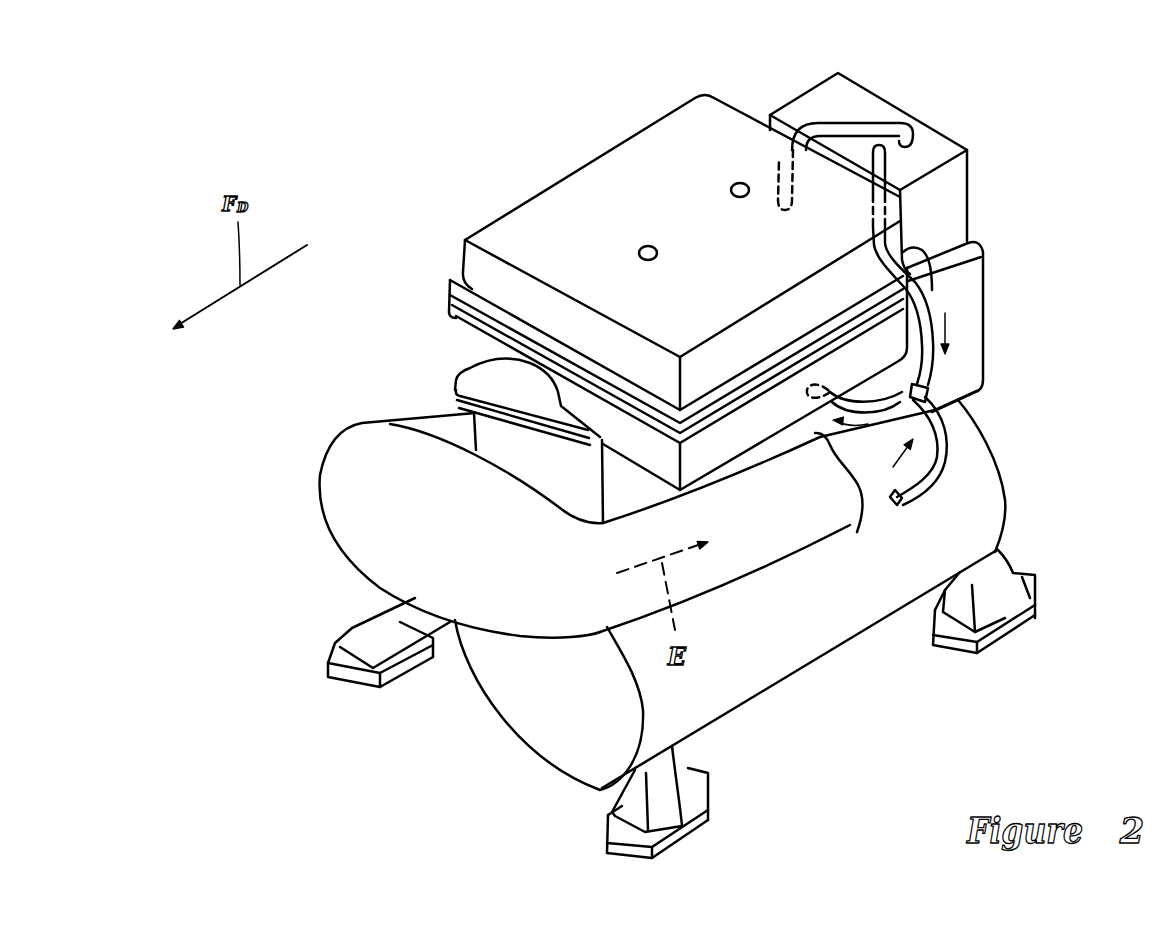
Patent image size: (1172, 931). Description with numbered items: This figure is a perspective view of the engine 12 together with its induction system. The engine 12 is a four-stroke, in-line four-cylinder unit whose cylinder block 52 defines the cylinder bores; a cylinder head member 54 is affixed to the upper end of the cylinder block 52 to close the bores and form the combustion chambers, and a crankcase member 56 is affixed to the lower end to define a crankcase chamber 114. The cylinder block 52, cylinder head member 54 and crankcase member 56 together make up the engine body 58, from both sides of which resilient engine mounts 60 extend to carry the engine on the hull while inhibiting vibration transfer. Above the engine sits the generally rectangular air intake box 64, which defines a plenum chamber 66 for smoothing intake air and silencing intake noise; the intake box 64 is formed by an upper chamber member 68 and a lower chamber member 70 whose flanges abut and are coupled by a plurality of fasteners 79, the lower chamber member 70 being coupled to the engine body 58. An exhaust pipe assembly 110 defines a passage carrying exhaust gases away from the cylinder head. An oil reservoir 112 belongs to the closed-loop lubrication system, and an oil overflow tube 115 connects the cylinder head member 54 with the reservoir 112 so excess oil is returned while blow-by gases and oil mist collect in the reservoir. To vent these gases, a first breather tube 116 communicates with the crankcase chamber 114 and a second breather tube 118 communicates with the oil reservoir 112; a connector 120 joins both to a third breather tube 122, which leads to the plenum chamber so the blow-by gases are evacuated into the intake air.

The engine 12 is at (687, 629).
The cylinder block 52 is at (552, 485).
The cylinder head member 54 is at (510, 383).
The crankcase member 56 is at (547, 723).
The engine body 58 is at (869, 292).
The engine mounts 60 is at (687, 757).
The air intake box 64 is at (589, 372).
The plenum chamber 66 is at (681, 234).
The upper chamber member 68 is at (470, 254).
The lower chamber member 70 is at (353, 280).
The fasteners 79 is at (733, 198).
The exhaust pipe assembly 110 is at (711, 595).
The oil reservoir 112 is at (946, 132).
The crankcase chamber 114 is at (829, 601).
The oil overflow tube 115 is at (871, 122).
The first breather tube 116 is at (917, 470).
The second breather tube 118 is at (910, 316).
The connector 120 is at (913, 397).
The third breather tube 122 is at (872, 380).